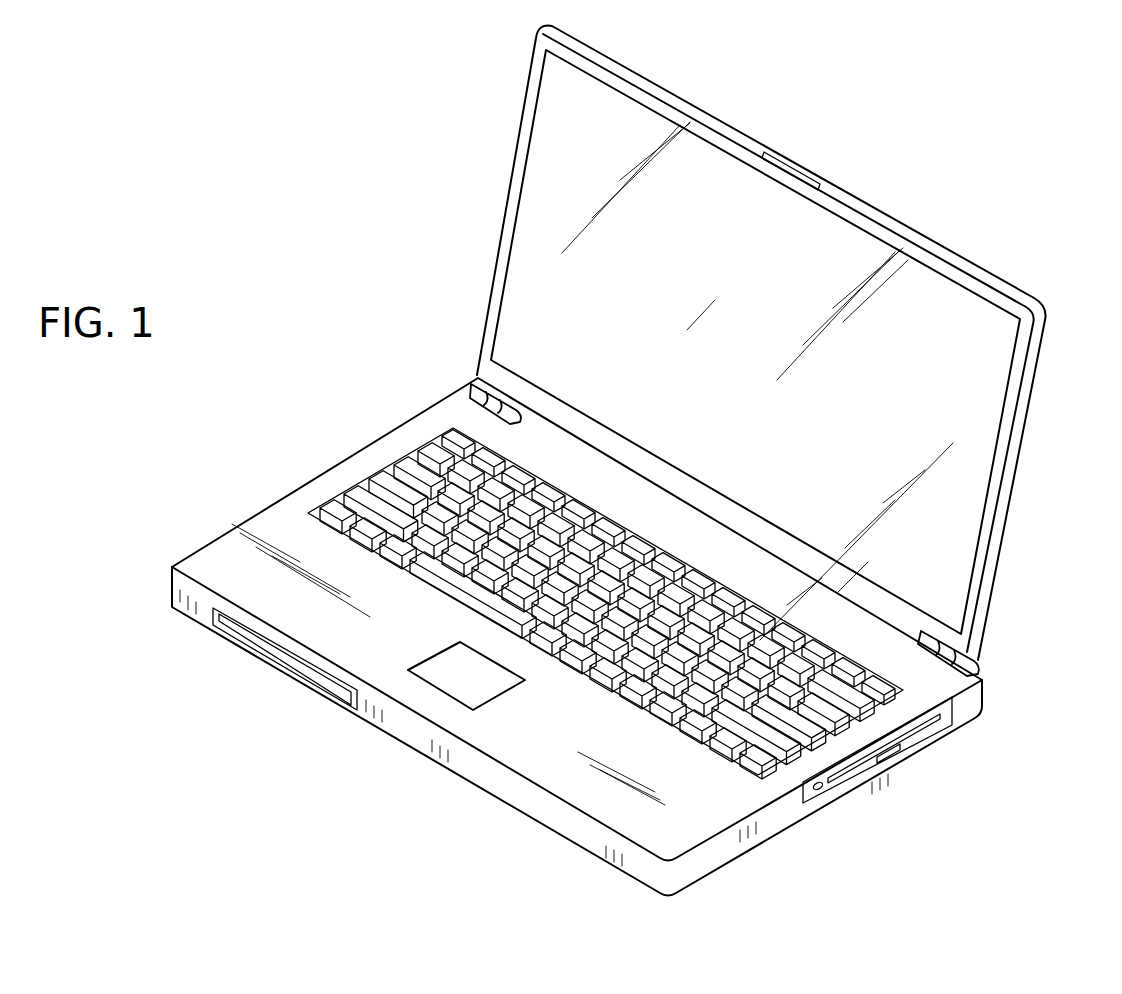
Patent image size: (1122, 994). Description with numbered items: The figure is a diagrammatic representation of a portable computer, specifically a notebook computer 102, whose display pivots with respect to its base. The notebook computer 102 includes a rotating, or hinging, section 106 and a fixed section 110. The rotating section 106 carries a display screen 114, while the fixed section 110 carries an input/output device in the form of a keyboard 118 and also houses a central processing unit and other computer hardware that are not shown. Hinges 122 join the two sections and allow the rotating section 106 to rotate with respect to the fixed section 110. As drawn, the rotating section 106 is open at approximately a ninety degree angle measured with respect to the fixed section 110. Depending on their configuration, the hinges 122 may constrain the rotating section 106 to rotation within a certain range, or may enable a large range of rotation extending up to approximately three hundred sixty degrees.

The notebook computer 102 is at (372, 382).
The rotating section 106 is at (1003, 543).
The fixed section 110 is at (787, 814).
The display screen 114 is at (781, 424).
The keyboard 118 is at (330, 500).
The hinges 122 is at (482, 393).